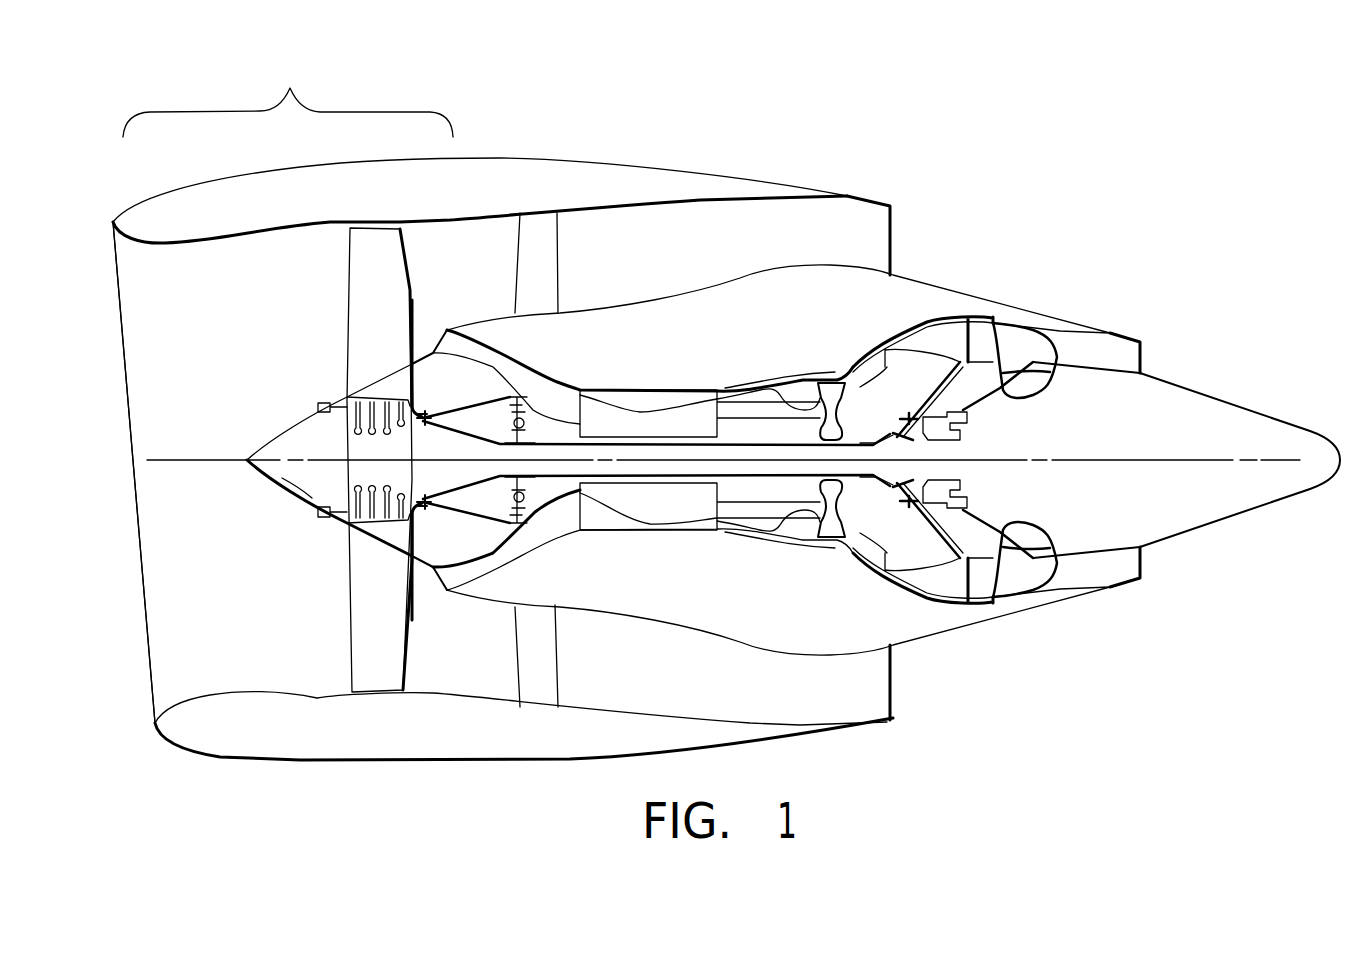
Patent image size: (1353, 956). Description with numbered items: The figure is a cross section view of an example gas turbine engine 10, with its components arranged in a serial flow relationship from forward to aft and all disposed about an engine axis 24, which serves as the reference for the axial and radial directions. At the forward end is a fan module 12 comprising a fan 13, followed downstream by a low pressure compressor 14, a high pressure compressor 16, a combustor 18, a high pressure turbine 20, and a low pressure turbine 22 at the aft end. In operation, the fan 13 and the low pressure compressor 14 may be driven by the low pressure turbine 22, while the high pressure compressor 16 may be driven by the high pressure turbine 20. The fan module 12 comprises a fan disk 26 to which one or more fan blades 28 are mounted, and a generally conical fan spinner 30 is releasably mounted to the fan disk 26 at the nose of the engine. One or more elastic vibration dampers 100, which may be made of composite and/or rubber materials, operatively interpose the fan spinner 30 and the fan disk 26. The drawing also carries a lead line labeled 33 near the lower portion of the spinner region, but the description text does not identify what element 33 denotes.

The gas turbine engine 10 is at (782, 124).
The fan module 12 is at (290, 88).
The fan 13 is at (330, 610).
The low pressure compressor 14 is at (490, 350).
The high pressure compressor 16 is at (603, 400).
The combustor 18 is at (787, 397).
The high pressure turbine 20 is at (833, 390).
The low pressure turbine 22 is at (927, 337).
The engine axis 24 is at (172, 458).
The fan disk 26 is at (392, 468).
The fan blades 28 is at (373, 300).
The fan spinner 30 is at (265, 483).
The spinner inner wall 33 is at (310, 487).
The elastic vibration dampers 100 is at (322, 402).